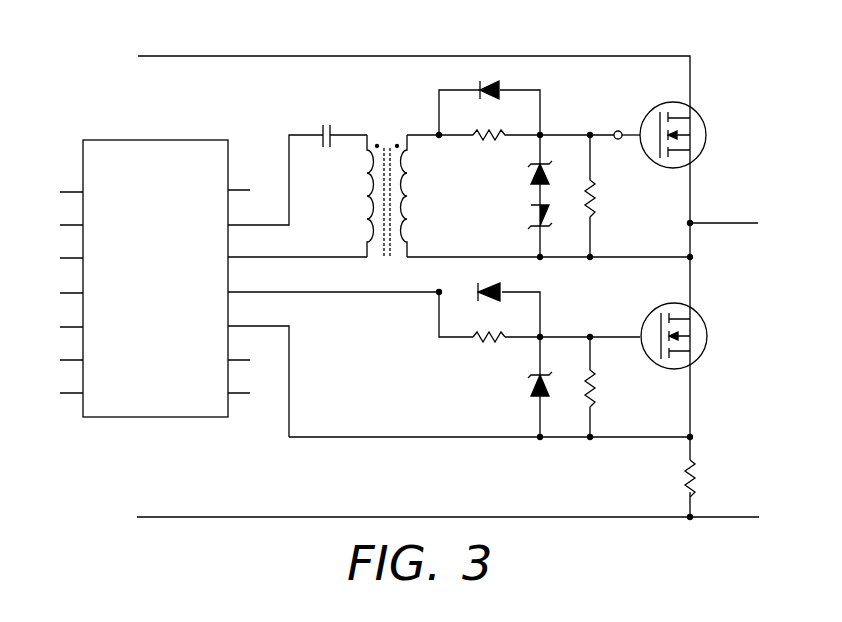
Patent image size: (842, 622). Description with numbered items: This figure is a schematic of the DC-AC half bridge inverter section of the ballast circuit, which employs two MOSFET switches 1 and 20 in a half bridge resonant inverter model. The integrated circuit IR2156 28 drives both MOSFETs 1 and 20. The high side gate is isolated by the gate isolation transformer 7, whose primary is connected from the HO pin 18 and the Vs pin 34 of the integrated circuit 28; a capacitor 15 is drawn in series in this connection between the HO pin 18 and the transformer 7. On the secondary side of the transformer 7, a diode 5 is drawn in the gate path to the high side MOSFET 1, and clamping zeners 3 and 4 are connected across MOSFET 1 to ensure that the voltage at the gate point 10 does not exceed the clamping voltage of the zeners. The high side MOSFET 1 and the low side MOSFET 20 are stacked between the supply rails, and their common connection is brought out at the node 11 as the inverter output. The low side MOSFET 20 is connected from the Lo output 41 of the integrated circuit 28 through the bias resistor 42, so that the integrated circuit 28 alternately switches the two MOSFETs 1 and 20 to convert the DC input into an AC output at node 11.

The integrated circuit IR2156 28 is at (150, 139).
The HO pin 18 is at (236, 218).
The Vs 34 is at (236, 252).
The Lo 41 is at (236, 286).
The capacitor 15 is at (326, 124).
The gate isolation transformer 7 is at (385, 140).
The diode 5 is at (490, 80).
The clamping zener 3 is at (530, 168).
The clamping zener 4 is at (530, 222).
The gate point of MOSFET 1 10 is at (618, 130).
The MOSFET switch 1 is at (700, 117).
The output node 11 is at (725, 222).
The low side MOSFET 20 is at (700, 318).
The bias resistor 42 is at (473, 340).